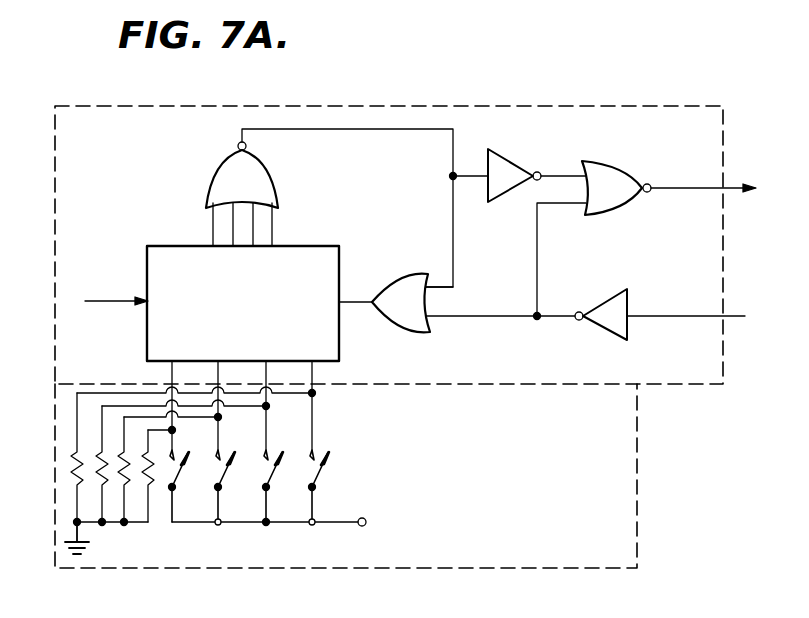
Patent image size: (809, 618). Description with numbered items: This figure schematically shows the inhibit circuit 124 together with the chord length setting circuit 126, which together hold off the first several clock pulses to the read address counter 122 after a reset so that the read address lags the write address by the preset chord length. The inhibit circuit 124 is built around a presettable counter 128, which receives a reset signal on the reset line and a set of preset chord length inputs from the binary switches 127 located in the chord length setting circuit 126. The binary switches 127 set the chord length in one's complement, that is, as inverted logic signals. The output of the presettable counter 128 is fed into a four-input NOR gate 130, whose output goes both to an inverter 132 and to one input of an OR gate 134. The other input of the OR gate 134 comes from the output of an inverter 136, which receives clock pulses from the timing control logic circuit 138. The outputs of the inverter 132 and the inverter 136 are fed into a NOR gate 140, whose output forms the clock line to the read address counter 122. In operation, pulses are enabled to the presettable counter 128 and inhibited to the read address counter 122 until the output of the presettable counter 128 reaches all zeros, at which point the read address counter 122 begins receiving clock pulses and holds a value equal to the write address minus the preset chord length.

The read address counter 122 is at (697, 207).
The inhibit circuit 124 is at (663, 127).
The chord length setting circuit 126 is at (638, 482).
The binary switches 127 is at (323, 410).
The presettable counter 128 is at (315, 246).
The NOR gate 130 is at (270, 175).
The inverter 132 is at (513, 162).
The OR gate 134 is at (382, 317).
The inverter 136 is at (608, 297).
The timing control logic circuit 138 is at (658, 348).
The NOR gate 140 is at (608, 148).